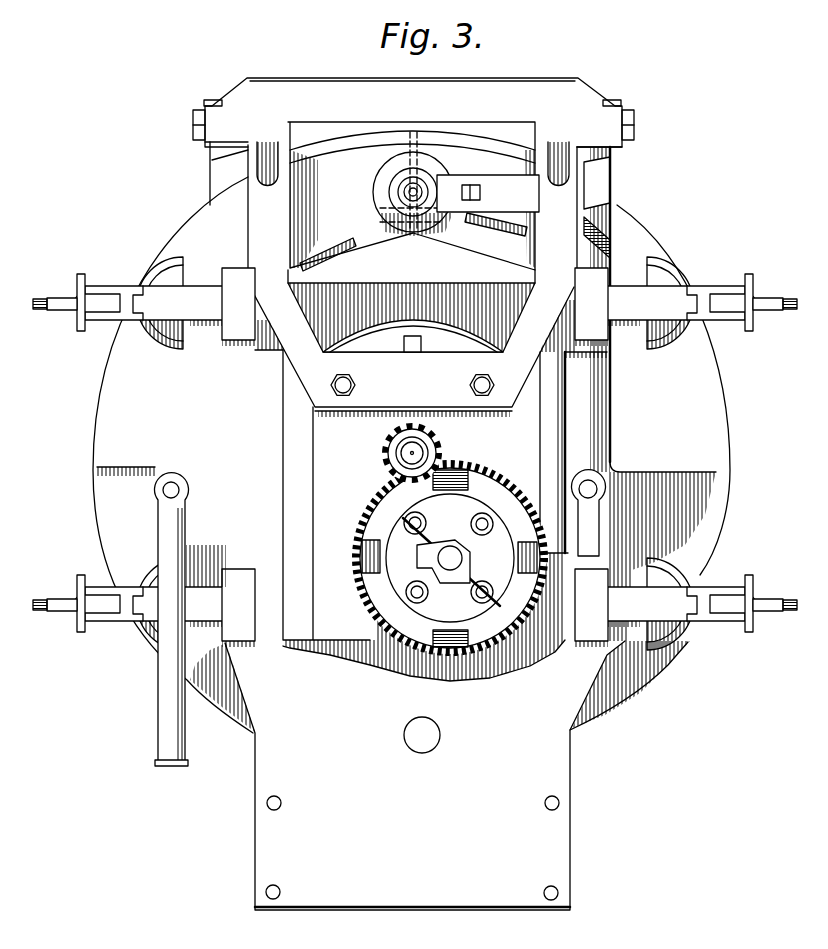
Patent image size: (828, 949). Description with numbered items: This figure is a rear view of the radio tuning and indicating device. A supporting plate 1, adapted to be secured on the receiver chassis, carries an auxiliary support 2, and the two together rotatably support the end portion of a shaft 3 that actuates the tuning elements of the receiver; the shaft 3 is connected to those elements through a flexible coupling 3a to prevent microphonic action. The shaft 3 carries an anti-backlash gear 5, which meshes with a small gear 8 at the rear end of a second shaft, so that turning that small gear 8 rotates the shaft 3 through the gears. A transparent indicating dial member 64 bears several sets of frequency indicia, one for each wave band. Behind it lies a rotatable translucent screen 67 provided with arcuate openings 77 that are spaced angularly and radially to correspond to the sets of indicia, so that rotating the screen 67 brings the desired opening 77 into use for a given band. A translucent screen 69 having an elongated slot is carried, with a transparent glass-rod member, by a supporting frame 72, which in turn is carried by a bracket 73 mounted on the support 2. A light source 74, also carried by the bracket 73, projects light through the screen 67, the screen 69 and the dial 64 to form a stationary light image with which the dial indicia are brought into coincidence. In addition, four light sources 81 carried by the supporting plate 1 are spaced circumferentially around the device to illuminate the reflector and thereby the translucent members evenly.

The supporting plate 1 is at (571, 783).
The auxiliary support 2 is at (320, 478).
The shaft 3 is at (462, 556).
The flexible coupling 3a is at (500, 494).
The gear 5 is at (492, 469).
The small gear 8 is at (390, 452).
The indicating dial member 64 is at (634, 681).
The translucent screen 67 is at (107, 385).
The translucent screen 69 is at (225, 166).
The supporting frame 72 is at (264, 80).
The bracket 73 is at (560, 201).
The light source 74 is at (406, 189).
The arcuate openings 77 is at (370, 216).
The light sources 81 is at (163, 270).